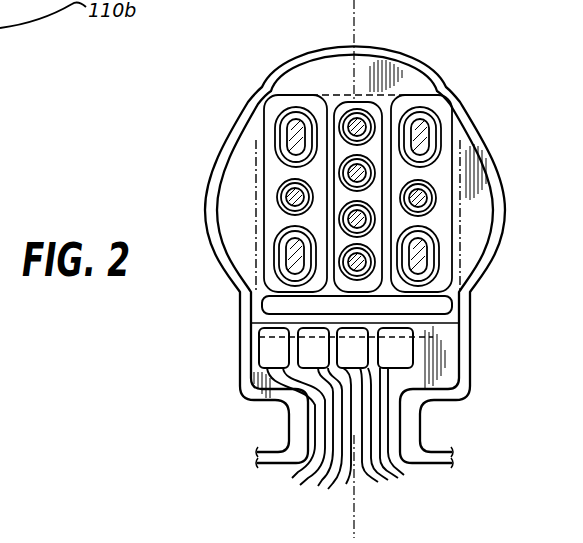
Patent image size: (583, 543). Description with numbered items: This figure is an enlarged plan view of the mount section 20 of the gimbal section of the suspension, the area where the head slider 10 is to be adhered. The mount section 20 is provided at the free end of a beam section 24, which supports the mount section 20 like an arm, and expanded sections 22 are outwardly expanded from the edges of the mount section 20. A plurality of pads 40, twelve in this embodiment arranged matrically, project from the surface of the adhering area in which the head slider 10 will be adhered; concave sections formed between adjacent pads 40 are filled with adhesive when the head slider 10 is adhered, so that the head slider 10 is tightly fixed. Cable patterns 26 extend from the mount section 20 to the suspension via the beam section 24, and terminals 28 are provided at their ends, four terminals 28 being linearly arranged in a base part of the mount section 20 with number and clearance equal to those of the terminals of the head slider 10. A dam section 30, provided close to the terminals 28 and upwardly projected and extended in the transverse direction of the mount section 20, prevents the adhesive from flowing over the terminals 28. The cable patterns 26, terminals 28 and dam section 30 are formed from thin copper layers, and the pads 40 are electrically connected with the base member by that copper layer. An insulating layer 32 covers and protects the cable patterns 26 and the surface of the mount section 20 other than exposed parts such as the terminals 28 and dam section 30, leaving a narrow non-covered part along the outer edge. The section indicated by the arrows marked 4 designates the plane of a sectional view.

The section line 4- 4 is at (372, 12).
The head slider 10 is at (398, 92).
The mount section 20 is at (484, 120).
The expanded sections 22 is at (338, 62).
The beam section 24 is at (300, 427).
The cable patterns 26 is at (327, 444).
The terminals 28 is at (265, 350).
The dam section 30 is at (433, 305).
The insulating layer 32 is at (480, 172).
The pads 40 is at (358, 124).